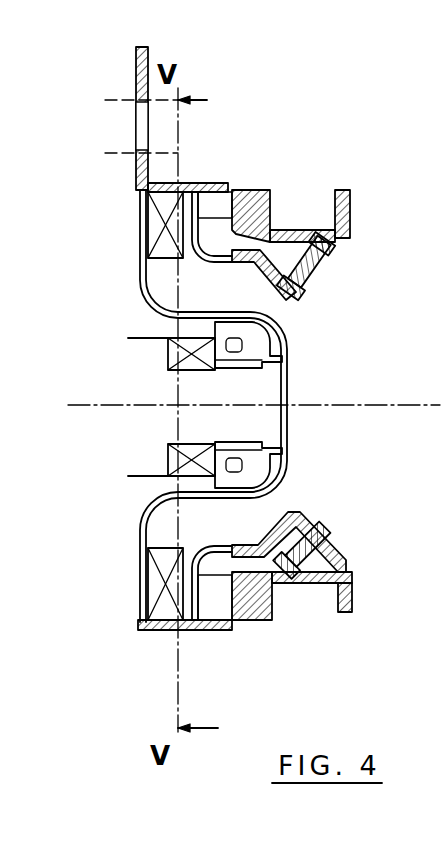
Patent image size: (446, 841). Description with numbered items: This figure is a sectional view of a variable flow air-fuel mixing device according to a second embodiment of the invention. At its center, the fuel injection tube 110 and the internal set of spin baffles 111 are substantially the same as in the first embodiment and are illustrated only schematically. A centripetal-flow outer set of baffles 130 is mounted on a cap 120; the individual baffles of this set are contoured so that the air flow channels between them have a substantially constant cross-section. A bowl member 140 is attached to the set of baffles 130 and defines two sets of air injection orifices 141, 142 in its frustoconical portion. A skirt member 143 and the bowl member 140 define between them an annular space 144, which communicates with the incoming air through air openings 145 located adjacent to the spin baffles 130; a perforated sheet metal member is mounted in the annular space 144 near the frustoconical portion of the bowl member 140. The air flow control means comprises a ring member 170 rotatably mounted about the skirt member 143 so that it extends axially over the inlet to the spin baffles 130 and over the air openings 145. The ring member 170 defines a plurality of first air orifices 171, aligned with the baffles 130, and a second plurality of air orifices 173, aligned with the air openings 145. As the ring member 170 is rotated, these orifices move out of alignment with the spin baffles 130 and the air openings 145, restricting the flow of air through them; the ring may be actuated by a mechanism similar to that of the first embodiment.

The fuel injection tube 110 is at (152, 391).
The internal set of spin baffles 111 is at (168, 476).
The cap 120 is at (270, 440).
The centripetal-flow outer set of baffles 130 is at (165, 562).
The bowl member 140 is at (290, 287).
The air injection orifices 141 is at (323, 257).
The air injection orifices 142 is at (350, 237).
The skirt member 143 is at (273, 200).
The annular space 144 is at (270, 563).
The air openings 145 is at (208, 605).
The ring member 170 is at (170, 627).
The first air orifices 171 is at (181, 183).
The second air orifices 173 is at (228, 180).